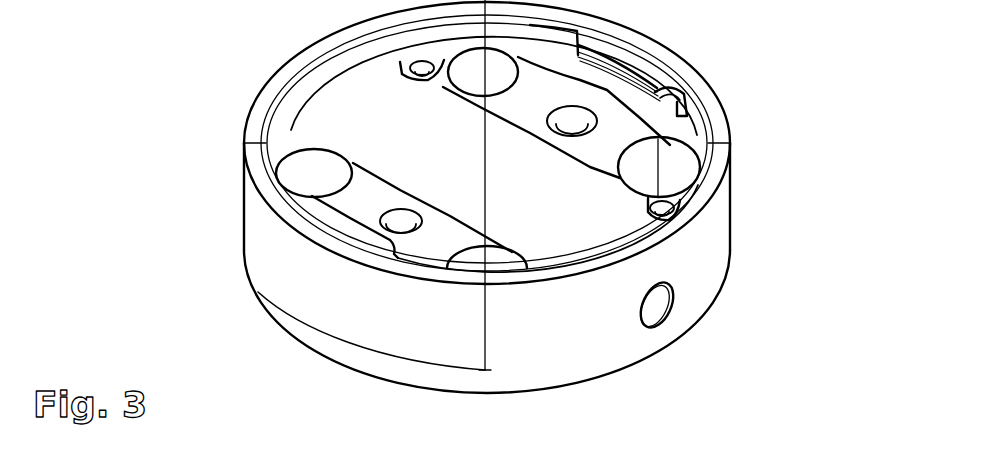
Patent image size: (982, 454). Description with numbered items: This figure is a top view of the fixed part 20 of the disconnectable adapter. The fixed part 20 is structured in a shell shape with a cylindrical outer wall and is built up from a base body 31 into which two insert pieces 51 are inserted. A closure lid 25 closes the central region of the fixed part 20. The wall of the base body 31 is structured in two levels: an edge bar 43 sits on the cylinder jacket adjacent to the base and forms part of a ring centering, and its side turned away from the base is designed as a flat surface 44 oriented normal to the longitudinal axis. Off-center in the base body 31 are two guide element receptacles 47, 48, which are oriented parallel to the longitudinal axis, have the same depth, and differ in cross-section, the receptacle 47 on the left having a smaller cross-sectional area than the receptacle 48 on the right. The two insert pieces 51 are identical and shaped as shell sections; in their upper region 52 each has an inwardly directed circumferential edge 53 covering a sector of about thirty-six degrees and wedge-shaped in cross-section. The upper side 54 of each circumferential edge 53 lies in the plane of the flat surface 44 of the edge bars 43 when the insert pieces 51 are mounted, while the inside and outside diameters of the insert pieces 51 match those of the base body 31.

The fixed part 20 is at (244, 95).
The closure lid 25 is at (387, 135).
The base body 31 is at (685, 297).
The edge bar 43 is at (370, 45).
The flat surface 44 is at (255, 129).
The guide element receptacle 47 is at (407, 222).
The guide element receptacle 48 is at (557, 123).
The insert piece 51 is at (268, 243).
The upper region 52 is at (523, 28).
The circumferential edge 53 is at (660, 94).
The upper side 54 is at (577, 47).